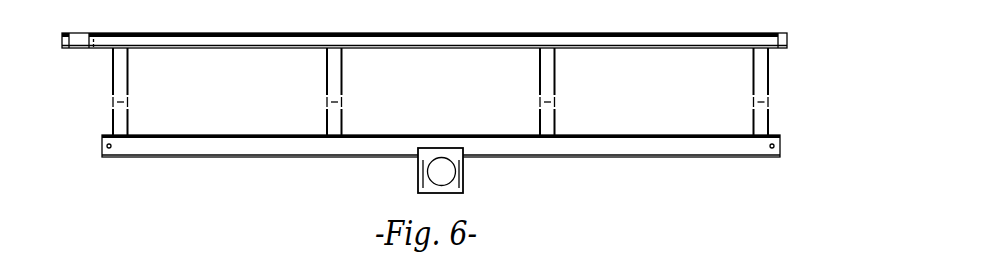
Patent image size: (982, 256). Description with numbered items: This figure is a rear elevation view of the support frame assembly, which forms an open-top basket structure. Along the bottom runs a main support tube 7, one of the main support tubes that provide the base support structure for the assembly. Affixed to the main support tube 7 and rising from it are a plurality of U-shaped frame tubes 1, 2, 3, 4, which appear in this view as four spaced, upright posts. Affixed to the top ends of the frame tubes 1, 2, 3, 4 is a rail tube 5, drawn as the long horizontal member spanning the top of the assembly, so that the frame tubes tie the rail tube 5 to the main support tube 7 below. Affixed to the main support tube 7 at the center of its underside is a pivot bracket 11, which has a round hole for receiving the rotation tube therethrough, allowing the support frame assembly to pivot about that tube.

The U-shaped frame tube 1 is at (769, 80).
The U-shaped frame tube 2 is at (557, 89).
The U-shaped frame tube 3 is at (343, 75).
The U-shaped frame tube 4 is at (128, 87).
The rail tube 5 is at (787, 33).
The main support tube 7 is at (185, 158).
The pivot bracket 11 is at (465, 193).